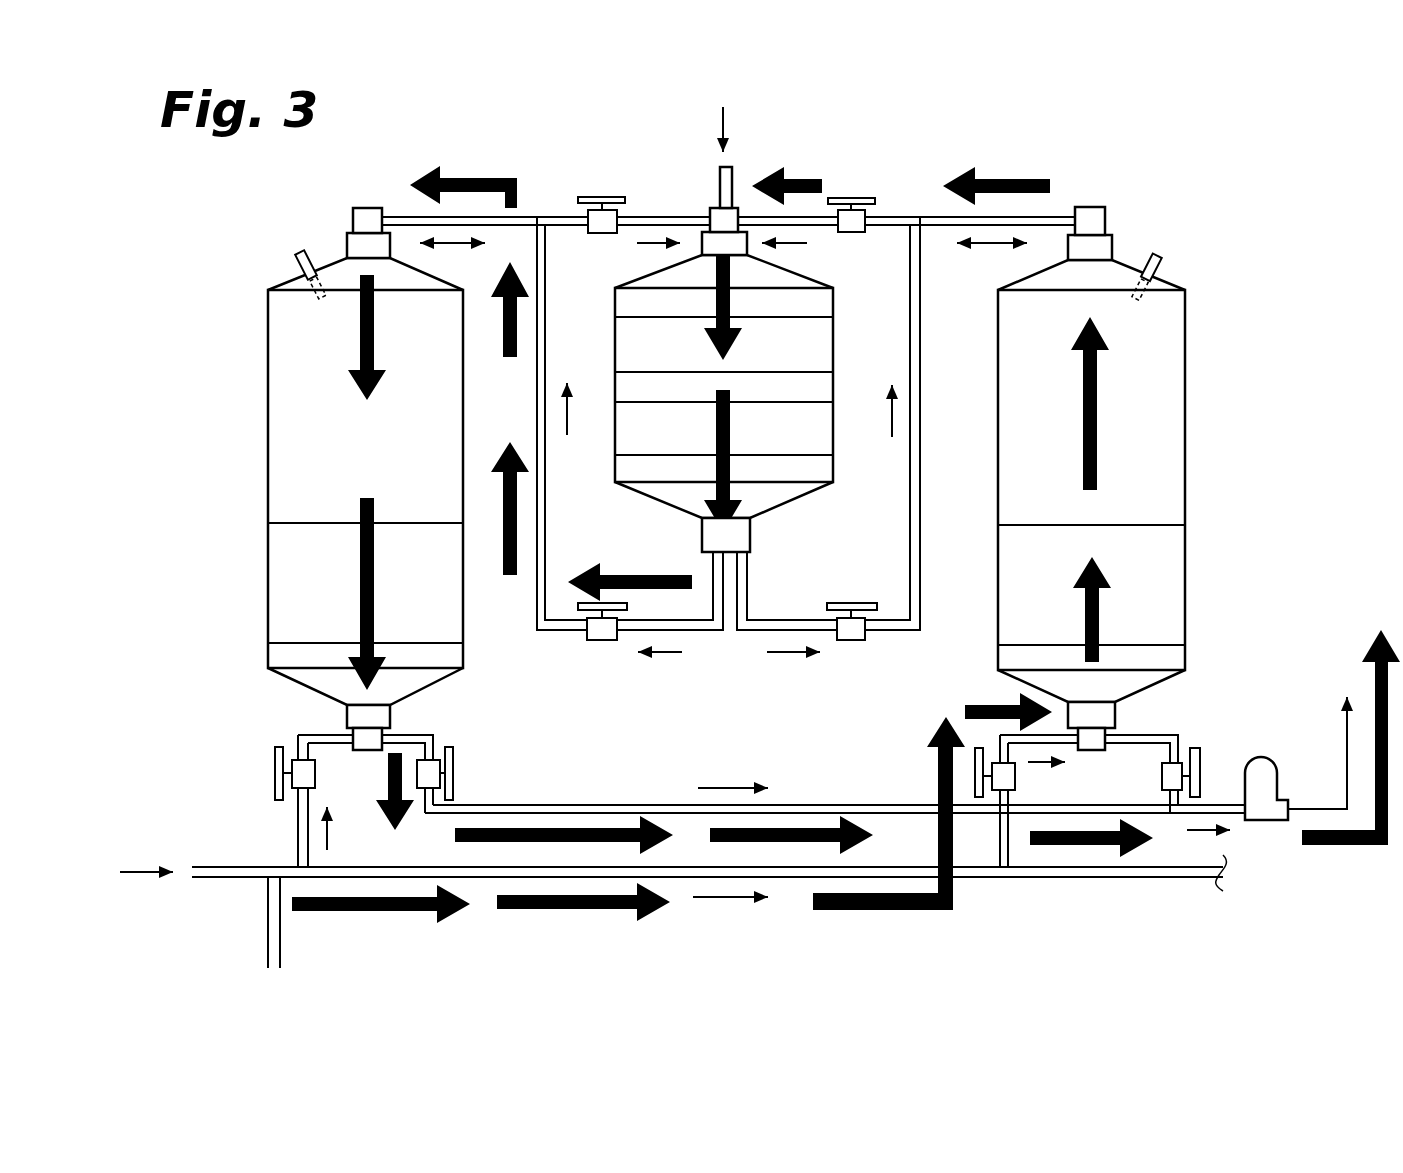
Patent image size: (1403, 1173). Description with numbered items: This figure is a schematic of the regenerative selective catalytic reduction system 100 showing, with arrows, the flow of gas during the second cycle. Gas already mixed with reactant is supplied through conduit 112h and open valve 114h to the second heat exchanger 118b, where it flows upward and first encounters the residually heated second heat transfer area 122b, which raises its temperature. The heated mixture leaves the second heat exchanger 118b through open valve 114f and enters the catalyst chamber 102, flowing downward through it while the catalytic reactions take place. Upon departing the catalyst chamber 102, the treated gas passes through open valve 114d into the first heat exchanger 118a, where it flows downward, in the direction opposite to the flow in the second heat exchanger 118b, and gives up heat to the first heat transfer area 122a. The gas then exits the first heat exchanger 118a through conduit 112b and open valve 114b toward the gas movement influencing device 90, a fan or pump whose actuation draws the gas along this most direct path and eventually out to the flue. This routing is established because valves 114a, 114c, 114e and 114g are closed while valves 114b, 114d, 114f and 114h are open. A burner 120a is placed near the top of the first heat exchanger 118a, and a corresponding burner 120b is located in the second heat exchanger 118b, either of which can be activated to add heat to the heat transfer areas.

The system for regenerative selective catalytic reduction 100 is at (186, 241).
The catalyst chamber 102 is at (658, 494).
The gas movement influencing device 90 is at (1258, 760).
The conduit 112b is at (803, 805).
The conduit 112h is at (797, 878).
The valve 114a is at (280, 773).
The valve 114b is at (454, 770).
The valve 114c is at (594, 200).
The valve 114d is at (598, 641).
The valve 114e is at (851, 641).
The valve 114f is at (866, 200).
The valve 114g is at (1197, 756).
The valve 114h is at (1014, 777).
The first heat exchanger 118a is at (323, 468).
The second heat exchanger 118b is at (1147, 473).
The burner 120a is at (305, 256).
The burner 120b is at (1166, 254).
The first heat transfer area 122a is at (272, 582).
The second heat transfer area 122b is at (1172, 572).